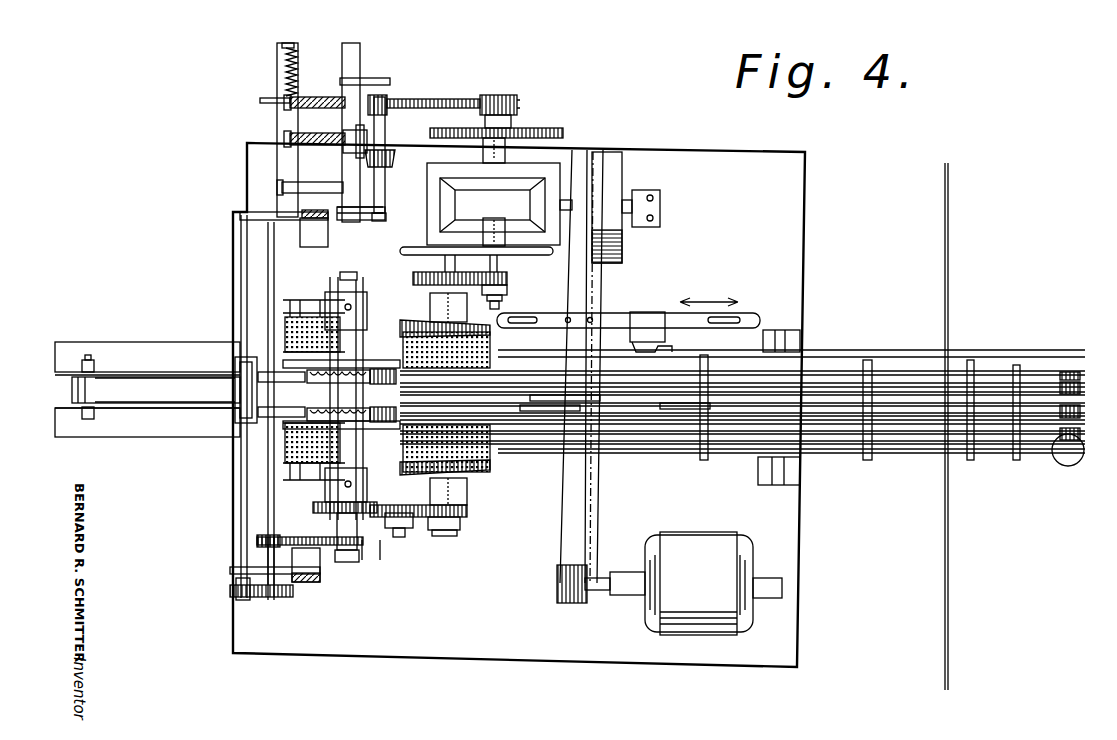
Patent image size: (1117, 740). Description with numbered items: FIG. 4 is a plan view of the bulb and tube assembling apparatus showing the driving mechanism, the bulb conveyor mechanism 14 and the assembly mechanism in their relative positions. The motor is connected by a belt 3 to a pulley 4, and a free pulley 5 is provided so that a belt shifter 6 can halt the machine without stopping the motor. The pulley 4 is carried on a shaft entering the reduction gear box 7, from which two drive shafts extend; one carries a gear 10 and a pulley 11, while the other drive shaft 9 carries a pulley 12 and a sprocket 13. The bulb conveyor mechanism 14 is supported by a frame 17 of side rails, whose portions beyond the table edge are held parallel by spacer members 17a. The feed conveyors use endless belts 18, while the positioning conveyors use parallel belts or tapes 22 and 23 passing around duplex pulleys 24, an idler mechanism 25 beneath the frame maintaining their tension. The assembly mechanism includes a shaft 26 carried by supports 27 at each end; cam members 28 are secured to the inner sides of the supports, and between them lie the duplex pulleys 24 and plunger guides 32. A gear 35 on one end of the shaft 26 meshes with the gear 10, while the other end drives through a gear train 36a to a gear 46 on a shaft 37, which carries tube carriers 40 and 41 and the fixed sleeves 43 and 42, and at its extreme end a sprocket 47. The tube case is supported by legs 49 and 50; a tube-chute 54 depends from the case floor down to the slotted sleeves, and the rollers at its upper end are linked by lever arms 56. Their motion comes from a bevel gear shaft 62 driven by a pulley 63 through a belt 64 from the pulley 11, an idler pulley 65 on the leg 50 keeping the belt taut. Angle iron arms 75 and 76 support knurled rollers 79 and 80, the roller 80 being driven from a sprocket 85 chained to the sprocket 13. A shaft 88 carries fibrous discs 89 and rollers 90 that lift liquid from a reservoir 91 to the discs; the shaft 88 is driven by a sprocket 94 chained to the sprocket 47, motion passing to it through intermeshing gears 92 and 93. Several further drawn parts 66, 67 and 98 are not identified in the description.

The belt 3 is at (570, 524).
The pulley 4 is at (571, 150).
The free pulley 5 is at (610, 160).
The belt shifter 6 is at (507, 275).
The reduction gear box 7 is at (437, 172).
The shaft 9 is at (502, 95).
The gear 10 is at (507, 284).
The pulley 11 is at (526, 282).
The pulley 12 is at (545, 129).
The sprocket 13 is at (518, 102).
The bulb conveyor mechanism 14 is at (949, 470).
The frame 17 is at (898, 362).
The spacer members 17a is at (975, 362).
The endless belts 18 is at (1080, 436).
The belt 22 is at (1068, 466).
The belt 23 is at (1085, 358).
The duplex pulleys 24 is at (525, 406).
The idler mechanism 25 is at (672, 405).
The shaft 26 is at (452, 538).
The supports 27 is at (447, 300).
The cam members 28 is at (435, 324).
The plunger guides 32 is at (490, 352).
The gear 35 is at (414, 277).
The gear train 36a is at (408, 538).
The shaft 37 is at (372, 556).
The tube carrier 40 is at (378, 410).
The tube carrier 41 is at (330, 384).
The sleeve 42 is at (365, 430).
The sleeve 43 is at (360, 360).
The gear 46 is at (326, 504).
The sprocket 47 is at (359, 540).
The leg 49 is at (322, 578).
The leg 50 is at (320, 236).
The tube-chute 54 is at (323, 305).
The lever arms 56 is at (468, 516).
The shaft 62 is at (279, 184).
The pulley 63 is at (378, 122).
The belt 64 is at (386, 196).
The idler pulley 65 is at (383, 218).
The rack 66 is at (447, 100).
The rod 67 is at (262, 100).
The angle iron arm 75 is at (283, 52).
The angle iron arm 76 is at (349, 50).
The knurled roller 79 is at (305, 98).
The knurled roller 80 is at (324, 147).
The sprocket 85 is at (387, 98).
The shaft 88 is at (240, 500).
The fibrous discs 89 is at (268, 372).
The rollers 90 is at (242, 424).
The reservoir 91 is at (70, 400).
The gear 92 is at (285, 594).
The gear 93 is at (234, 588).
The sprocket 94 is at (290, 540).
The rod 98 is at (138, 398).